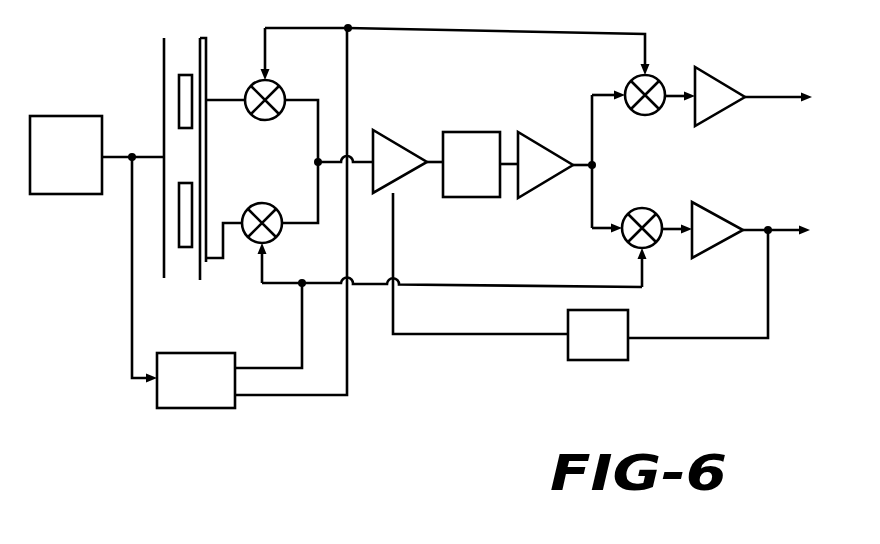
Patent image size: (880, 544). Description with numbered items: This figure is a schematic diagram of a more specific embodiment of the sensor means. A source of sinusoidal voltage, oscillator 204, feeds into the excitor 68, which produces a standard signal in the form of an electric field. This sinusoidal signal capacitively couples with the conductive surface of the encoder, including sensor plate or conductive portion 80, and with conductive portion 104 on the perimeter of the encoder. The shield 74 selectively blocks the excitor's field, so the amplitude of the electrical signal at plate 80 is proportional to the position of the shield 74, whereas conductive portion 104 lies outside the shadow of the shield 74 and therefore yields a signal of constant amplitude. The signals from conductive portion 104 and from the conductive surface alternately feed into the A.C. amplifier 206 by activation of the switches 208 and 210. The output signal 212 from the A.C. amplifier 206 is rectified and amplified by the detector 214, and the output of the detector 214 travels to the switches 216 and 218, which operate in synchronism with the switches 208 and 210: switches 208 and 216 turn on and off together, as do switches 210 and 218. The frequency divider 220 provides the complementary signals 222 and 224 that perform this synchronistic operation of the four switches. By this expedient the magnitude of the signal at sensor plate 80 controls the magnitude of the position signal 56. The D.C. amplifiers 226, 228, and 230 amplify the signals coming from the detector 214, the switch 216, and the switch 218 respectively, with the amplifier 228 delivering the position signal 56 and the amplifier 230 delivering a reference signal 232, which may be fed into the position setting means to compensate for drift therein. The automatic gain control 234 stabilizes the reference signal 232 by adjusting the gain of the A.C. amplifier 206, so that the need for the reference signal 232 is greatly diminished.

The electrical signal 56 is at (775, 97).
The excitor 68 is at (163, 63).
The shield 74 is at (182, 75).
The conductive portion 80 is at (207, 82).
The conductive portion 104 is at (204, 268).
The oscillator 204 is at (79, 129).
The A.C. amplifier 206 is at (393, 146).
The switch 208 is at (271, 83).
The switch 210 is at (268, 208).
The output signal 212 is at (433, 160).
The detector 214 is at (475, 145).
The switch 216 is at (637, 82).
The switch 218 is at (622, 243).
The frequency divider 220 is at (210, 365).
The complementary signal 222 is at (301, 340).
The complementary signal 224 is at (347, 345).
The D.C. amplifier 226 is at (541, 156).
The D.C. amplifier 228 is at (714, 80).
The D.C. amplifier 230 is at (724, 239).
The reference signal 232 is at (795, 198).
The automatic gain control 234 is at (608, 360).